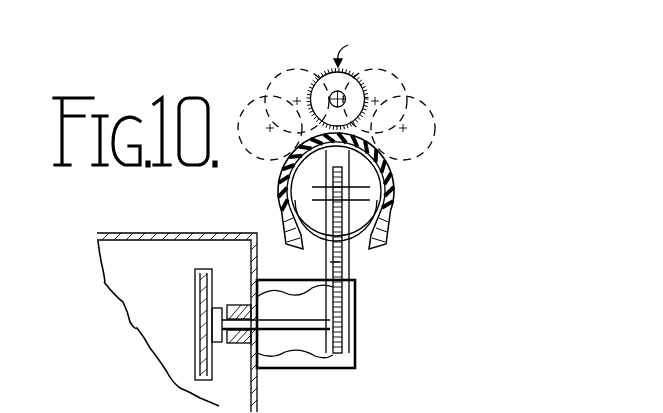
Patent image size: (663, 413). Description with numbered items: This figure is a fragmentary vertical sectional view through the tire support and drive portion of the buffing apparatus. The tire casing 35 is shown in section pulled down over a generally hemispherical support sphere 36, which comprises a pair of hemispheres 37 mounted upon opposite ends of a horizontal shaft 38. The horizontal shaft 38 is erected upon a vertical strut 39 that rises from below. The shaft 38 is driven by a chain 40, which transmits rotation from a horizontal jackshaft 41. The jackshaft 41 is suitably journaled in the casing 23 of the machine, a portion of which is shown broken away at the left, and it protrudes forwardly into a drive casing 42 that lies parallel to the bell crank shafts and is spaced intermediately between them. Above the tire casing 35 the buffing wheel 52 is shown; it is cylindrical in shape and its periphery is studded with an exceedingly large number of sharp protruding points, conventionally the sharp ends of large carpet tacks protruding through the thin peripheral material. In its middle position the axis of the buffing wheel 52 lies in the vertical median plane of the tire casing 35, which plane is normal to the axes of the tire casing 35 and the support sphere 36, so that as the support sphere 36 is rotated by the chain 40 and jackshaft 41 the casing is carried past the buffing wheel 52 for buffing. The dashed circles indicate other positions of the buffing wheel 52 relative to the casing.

The casing 23 is at (166, 212).
The tire casing 35 is at (390, 199).
The support sphere 36 is at (360, 233).
The hemispheres 37 is at (305, 249).
The horizontal shaft 38 is at (376, 170).
The vertical strut 39 is at (350, 276).
The chain 40 is at (330, 263).
The horizontal jackshaft 41 is at (296, 331).
The drive casing 42 is at (355, 354).
The buffing wheel 52 is at (354, 70).